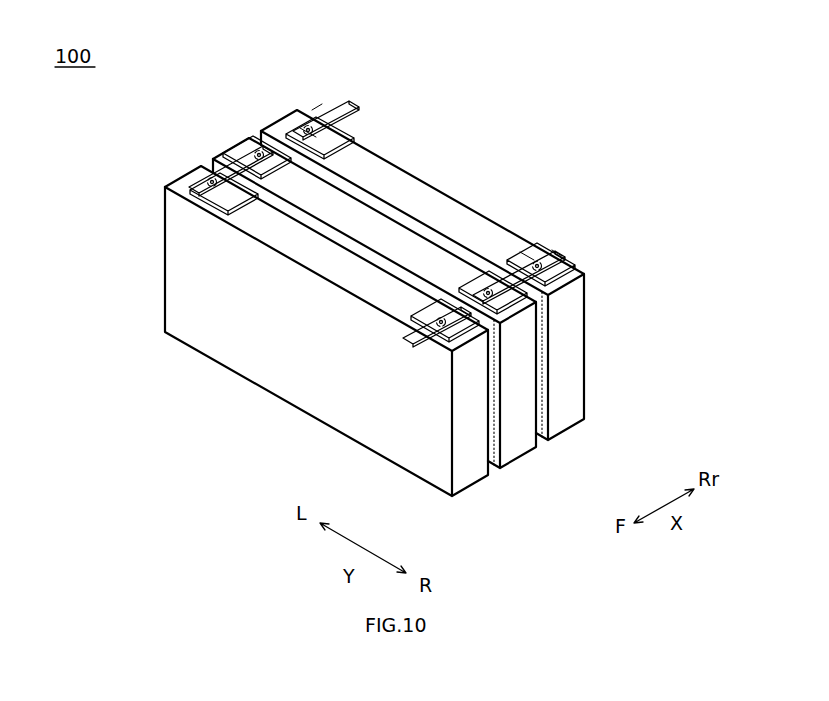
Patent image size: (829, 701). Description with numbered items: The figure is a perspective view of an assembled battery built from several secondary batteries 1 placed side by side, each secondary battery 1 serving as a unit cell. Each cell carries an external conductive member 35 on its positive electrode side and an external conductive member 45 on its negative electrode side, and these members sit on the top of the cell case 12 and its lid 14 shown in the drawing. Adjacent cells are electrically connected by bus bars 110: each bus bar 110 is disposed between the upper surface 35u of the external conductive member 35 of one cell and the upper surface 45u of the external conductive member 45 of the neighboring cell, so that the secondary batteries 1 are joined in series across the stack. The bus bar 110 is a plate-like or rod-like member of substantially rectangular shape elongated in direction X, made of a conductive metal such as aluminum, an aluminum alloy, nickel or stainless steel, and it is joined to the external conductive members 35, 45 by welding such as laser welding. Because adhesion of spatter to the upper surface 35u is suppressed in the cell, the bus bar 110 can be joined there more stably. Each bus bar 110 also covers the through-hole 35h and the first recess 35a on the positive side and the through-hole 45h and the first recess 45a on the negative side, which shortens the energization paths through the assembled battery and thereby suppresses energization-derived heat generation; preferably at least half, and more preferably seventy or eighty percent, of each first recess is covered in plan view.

The secondary battery 1 is at (570, 447).
The battery case 12 is at (470, 452).
The lid / top face of case 14 is at (295, 238).
The external conductive member 35 is at (243, 146).
The upper surface 35u is at (527, 249).
The first recess 35a is at (557, 248).
The through-hole 35h is at (548, 258).
The external conductive member 45 is at (203, 168).
The upper surface 45u is at (357, 117).
The first recess 45a is at (318, 107).
The through-hole 45h is at (300, 119).
The bus bar 110 is at (327, 99).